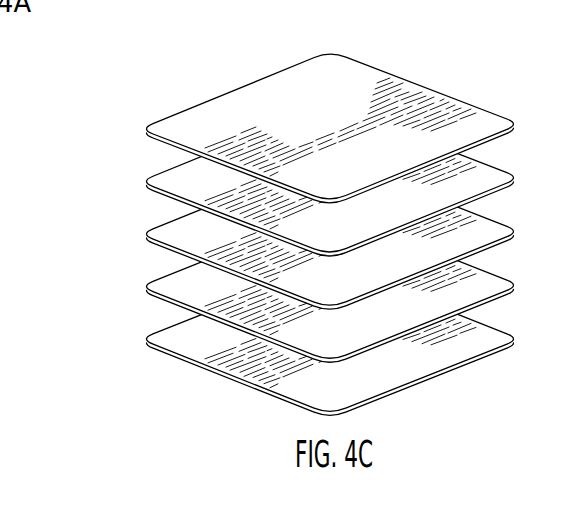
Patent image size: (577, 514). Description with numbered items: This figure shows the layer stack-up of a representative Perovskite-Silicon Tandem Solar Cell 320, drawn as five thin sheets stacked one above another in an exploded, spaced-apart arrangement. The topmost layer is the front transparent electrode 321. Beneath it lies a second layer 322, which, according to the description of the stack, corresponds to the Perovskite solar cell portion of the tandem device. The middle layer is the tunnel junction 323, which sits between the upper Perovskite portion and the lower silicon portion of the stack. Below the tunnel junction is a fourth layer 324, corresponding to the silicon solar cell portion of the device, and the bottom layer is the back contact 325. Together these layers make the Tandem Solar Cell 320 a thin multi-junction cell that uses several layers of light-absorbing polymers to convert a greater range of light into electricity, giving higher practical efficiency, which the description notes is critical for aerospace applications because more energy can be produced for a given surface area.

The Perovskite-Silicon Tandem Solar Cell 320 is at (327, 213).
The front transparent electrode 321 is at (506, 121).
The second sheet 322 is at (147, 182).
The tunnel junction 323 is at (513, 233).
The fourth sheet 324 is at (147, 291).
The back contact 325 is at (513, 340).